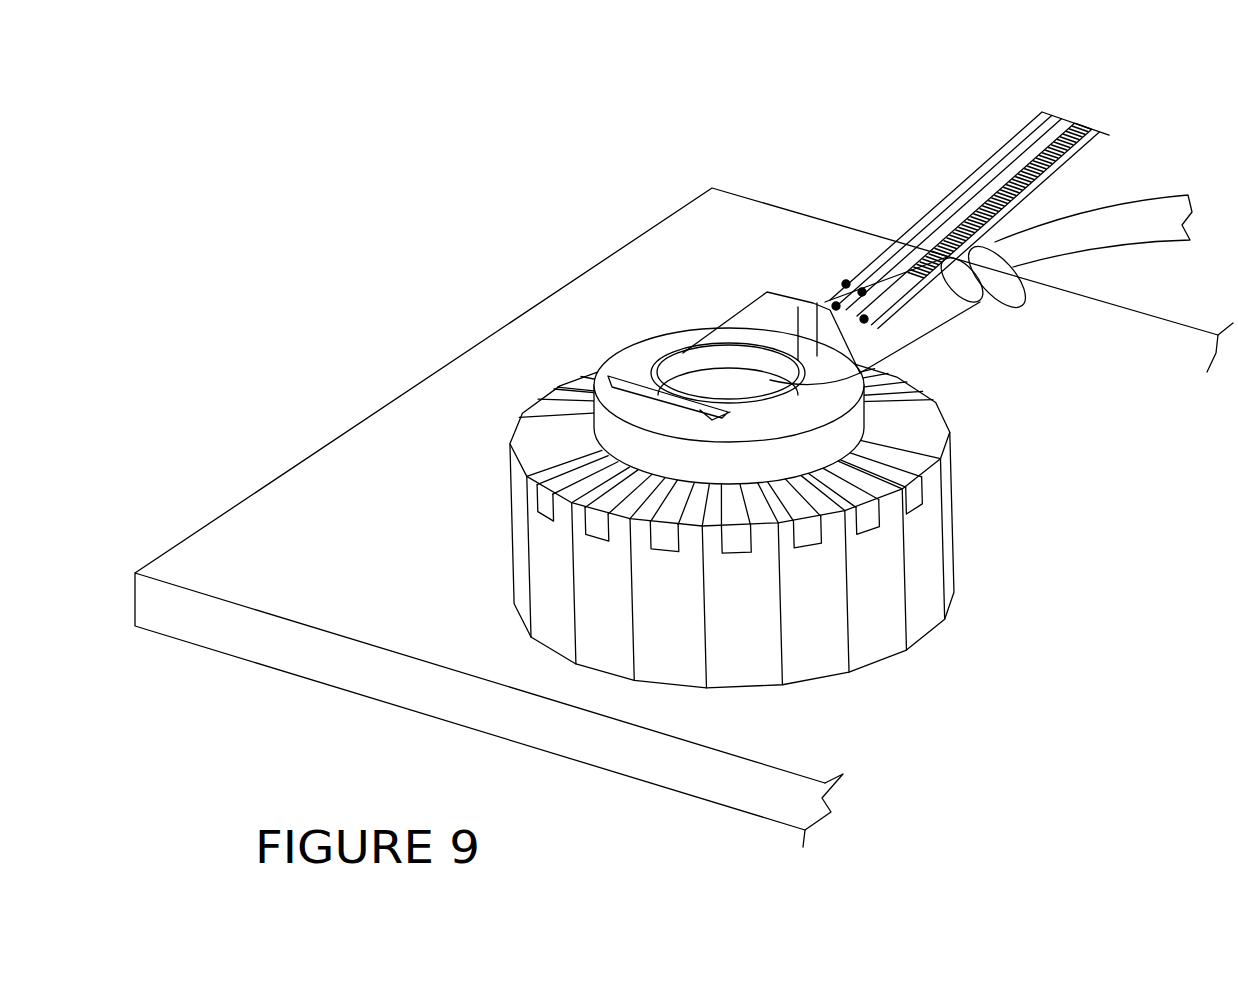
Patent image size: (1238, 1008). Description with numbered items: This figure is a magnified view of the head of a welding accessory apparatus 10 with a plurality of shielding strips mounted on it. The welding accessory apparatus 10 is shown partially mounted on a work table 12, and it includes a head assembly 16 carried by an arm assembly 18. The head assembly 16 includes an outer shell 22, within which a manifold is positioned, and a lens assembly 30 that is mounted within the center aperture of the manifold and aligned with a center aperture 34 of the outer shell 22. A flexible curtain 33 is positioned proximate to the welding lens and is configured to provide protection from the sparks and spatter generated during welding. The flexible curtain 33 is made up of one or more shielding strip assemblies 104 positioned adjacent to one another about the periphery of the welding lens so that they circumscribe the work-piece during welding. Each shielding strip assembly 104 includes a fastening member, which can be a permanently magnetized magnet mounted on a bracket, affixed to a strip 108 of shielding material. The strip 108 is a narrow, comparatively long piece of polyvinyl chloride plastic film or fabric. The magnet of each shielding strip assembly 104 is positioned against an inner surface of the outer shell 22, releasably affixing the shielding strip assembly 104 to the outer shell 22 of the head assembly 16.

The welding accessory apparatus 10 is at (684, 517).
The work table 12 is at (418, 462).
The head assembly 16 is at (635, 283).
The arm assembly 18 is at (975, 168).
The outer shell 22 is at (632, 358).
The lens assembly 30 is at (744, 333).
The flexible curtain 33 is at (629, 582).
The center aperture 34 is at (903, 363).
The shielding strip assembly 104 is at (732, 582).
The strip 108 is at (670, 673).